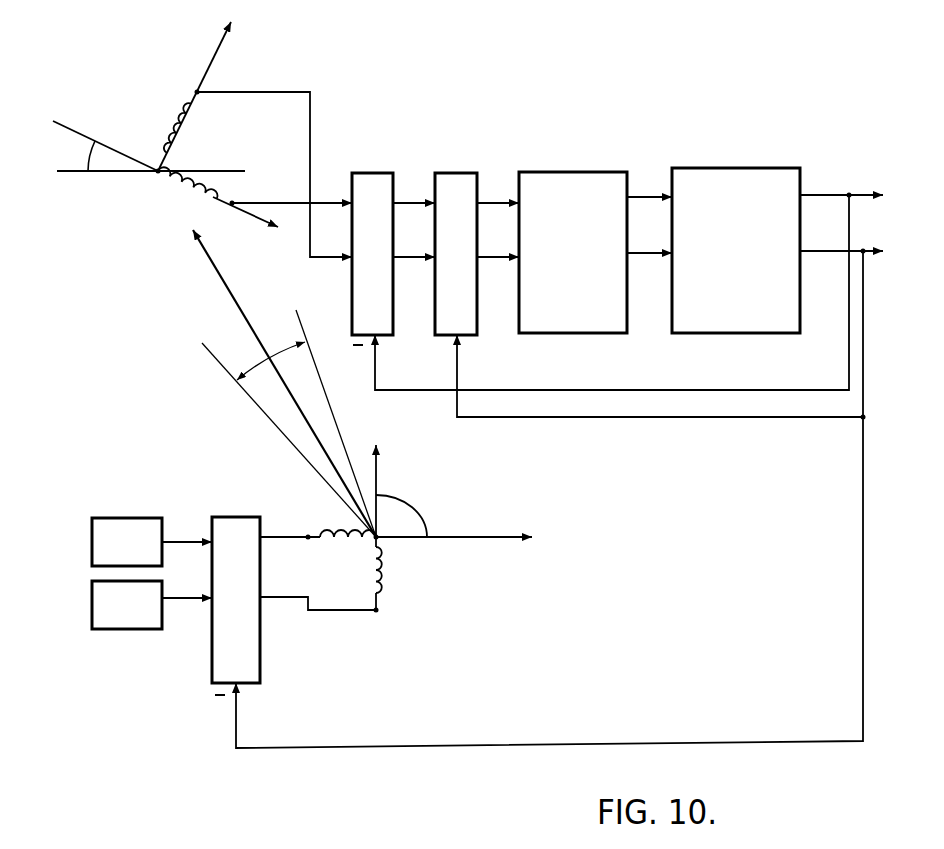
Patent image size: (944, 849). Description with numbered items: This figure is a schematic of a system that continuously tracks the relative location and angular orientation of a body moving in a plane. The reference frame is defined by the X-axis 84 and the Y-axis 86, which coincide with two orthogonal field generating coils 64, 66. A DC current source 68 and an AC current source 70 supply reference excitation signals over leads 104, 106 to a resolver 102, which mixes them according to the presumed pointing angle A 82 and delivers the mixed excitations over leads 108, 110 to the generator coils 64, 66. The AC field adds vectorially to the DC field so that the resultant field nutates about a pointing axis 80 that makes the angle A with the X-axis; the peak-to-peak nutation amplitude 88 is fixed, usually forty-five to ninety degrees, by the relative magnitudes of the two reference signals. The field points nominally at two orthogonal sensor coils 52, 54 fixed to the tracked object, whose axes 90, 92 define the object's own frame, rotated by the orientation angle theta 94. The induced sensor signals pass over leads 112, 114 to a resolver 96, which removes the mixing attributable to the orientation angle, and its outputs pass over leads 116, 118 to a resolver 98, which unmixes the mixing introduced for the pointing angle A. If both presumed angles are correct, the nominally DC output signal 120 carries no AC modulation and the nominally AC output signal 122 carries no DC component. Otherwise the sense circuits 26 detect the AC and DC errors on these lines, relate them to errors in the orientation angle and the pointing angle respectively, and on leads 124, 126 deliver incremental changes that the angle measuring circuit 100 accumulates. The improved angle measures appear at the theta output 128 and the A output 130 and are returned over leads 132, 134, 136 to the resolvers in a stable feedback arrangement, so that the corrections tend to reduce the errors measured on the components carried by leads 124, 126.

The sense circuits 26 is at (584, 168).
The sensor coil 52 is at (183, 190).
The sensor coil 54 is at (173, 130).
The field generating coil 64 is at (350, 543).
The field generating coil 66 is at (383, 572).
The DC current source 68 is at (130, 517).
The AC current source 70 is at (134, 630).
The pointing axis 80 is at (237, 307).
The pointing angle A 82 is at (421, 510).
The X-axis 84 is at (497, 539).
The Y-axis 86 is at (378, 477).
The nutation amplitude 88 is at (257, 360).
The sensor coil axis 90 is at (257, 215).
The sensor coil axis 92 is at (203, 73).
The orientation angle θ 94 is at (86, 166).
The resolver 96 is at (386, 170).
The resolver 98 is at (468, 170).
The angle measuring circuit 100 is at (745, 166).
The resolver 102 is at (243, 517).
The lead 104 is at (196, 519).
The lead 106 is at (184, 596).
The lead 108 is at (287, 535).
The lead 110 is at (282, 596).
The lead 112 is at (330, 201).
The lead 114 is at (330, 256).
The lead 116 is at (411, 199).
The lead 118 is at (421, 252).
The DC output signal 120 is at (496, 199).
The AC output signal 122 is at (498, 254).
The lead 124 is at (649, 192).
The lead 126 is at (649, 250).
The θ output 128 is at (840, 190).
The A output 130 is at (839, 250).
The lead 132 is at (428, 388).
The lead 134 is at (516, 416).
The lead 136 is at (272, 747).